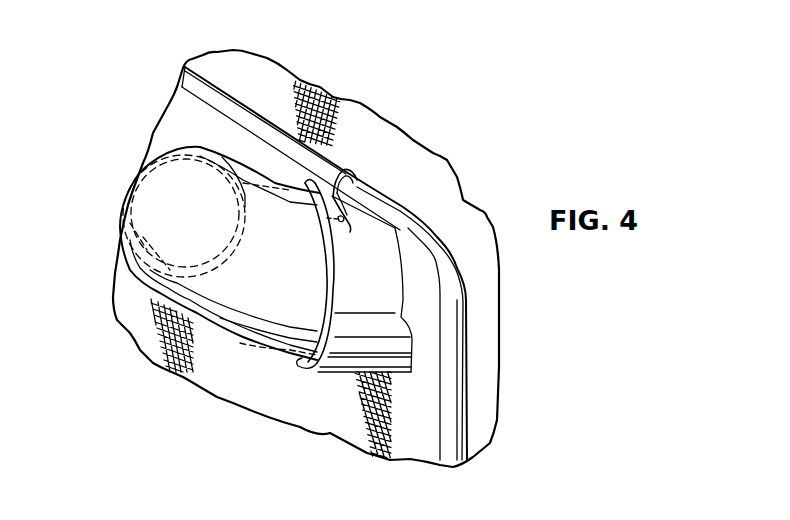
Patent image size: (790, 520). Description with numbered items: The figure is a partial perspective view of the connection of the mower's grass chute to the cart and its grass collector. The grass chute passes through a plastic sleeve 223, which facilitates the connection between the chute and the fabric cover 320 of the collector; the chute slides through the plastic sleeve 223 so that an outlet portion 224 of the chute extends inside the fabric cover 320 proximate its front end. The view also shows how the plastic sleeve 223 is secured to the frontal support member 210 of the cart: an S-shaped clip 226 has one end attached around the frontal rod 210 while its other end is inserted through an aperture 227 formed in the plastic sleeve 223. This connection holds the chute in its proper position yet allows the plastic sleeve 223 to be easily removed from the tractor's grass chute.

The frontal support member 210 is at (223, 94).
The plastic sleeve 223 is at (343, 358).
The outlet portion 224 is at (173, 292).
The S-shaped clip 226 is at (353, 173).
The aperture 227 is at (350, 233).
The fabric cover 320 is at (352, 117).